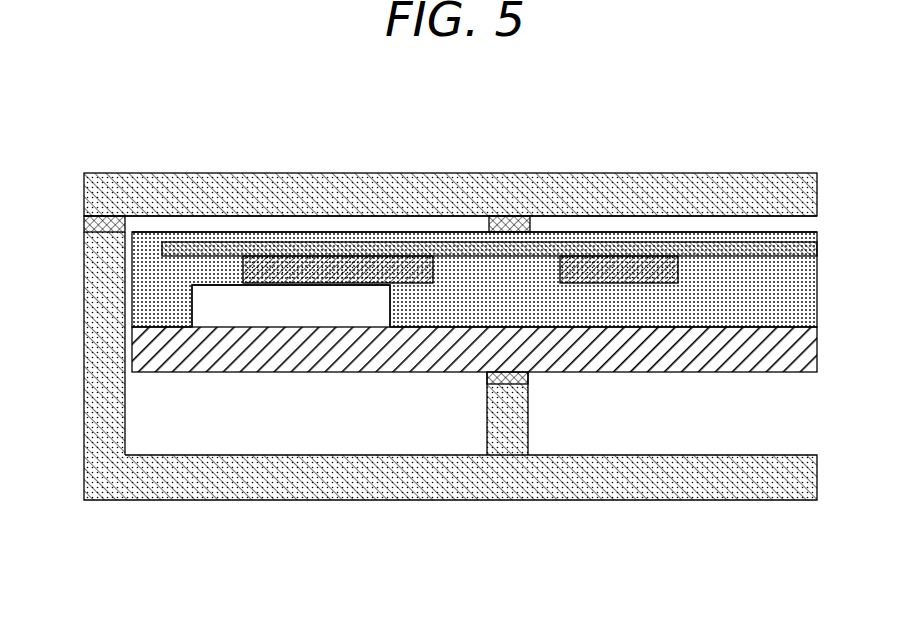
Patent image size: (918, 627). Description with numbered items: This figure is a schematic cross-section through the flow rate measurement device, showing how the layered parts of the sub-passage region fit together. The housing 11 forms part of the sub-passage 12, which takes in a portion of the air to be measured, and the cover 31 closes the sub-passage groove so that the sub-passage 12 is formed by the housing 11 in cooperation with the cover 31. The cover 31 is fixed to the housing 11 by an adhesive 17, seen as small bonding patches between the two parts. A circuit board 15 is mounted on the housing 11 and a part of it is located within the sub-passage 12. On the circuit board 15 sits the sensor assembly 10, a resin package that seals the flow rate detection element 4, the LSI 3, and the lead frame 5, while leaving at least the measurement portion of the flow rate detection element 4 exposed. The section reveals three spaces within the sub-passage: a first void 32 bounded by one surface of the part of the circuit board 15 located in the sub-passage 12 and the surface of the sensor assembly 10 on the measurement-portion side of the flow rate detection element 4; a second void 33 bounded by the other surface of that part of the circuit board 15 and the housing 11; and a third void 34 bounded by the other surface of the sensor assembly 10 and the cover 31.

The LSI 3 is at (632, 268).
The flow rate detection element 4 is at (343, 270).
The lead frame 5 is at (609, 242).
The sensor assembly 10 is at (708, 233).
The housing 11 is at (538, 483).
The sub-passage 12 is at (147, 427).
The circuit board 15 is at (540, 345).
The adhesive 17 is at (100, 210).
The cover 31 is at (500, 200).
The first void 32 is at (335, 303).
The second void 33 is at (240, 427).
The third void 34 is at (270, 223).